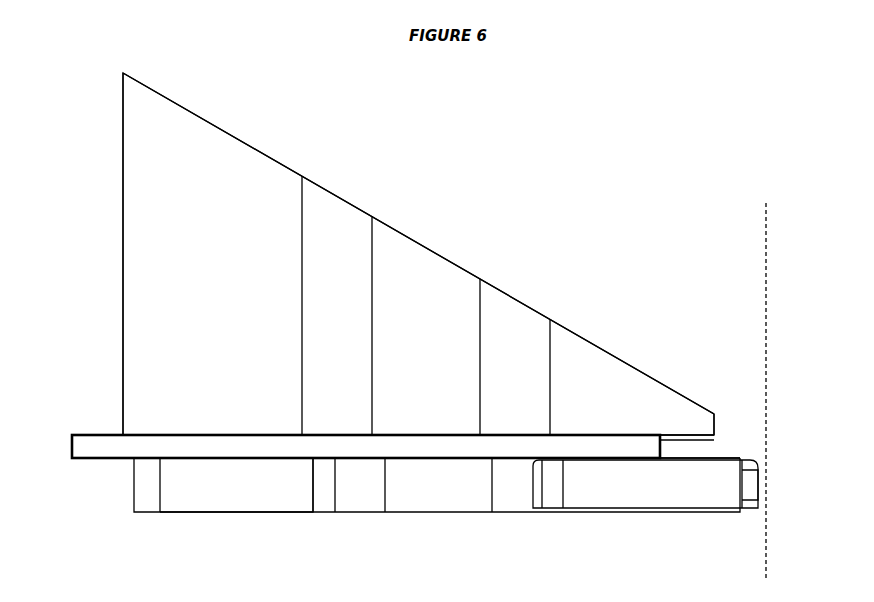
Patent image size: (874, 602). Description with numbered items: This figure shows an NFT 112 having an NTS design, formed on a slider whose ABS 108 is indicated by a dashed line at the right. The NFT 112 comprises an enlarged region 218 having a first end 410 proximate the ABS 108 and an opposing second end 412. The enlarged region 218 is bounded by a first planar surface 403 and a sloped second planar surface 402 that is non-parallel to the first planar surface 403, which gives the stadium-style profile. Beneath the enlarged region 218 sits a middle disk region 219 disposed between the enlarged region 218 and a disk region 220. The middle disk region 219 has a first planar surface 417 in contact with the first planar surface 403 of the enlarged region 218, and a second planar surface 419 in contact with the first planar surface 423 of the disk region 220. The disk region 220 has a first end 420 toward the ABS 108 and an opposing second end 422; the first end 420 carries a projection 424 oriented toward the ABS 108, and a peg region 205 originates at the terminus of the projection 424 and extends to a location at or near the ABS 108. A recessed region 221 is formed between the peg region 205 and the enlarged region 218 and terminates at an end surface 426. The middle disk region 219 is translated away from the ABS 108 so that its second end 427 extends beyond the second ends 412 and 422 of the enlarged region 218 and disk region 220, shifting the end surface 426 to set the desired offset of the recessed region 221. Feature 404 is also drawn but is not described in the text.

The enlarged region 218 is at (148, 152).
The second planar surface 402 is at (358, 206).
The second end 412 is at (123, 268).
The first planar surface 417 is at (248, 435).
The first planar surface 403 is at (210, 435).
The middle disk region 219 is at (105, 432).
The second end 427 is at (72, 448).
The second end 422 is at (134, 493).
The second planar surface 419 is at (160, 458).
The disk region 220 is at (213, 488).
The partition 404 is at (367, 517).
The first planar surface 423 is at (467, 460).
The end surface 426 is at (660, 443).
The first end 420 is at (742, 460).
The peg region 205 is at (755, 500).
The first end 410 is at (716, 418).
The recessed region 221 is at (708, 441).
The projection 424 is at (715, 458).
The NFT 112 is at (527, 231).
The ABS 108 is at (768, 250).